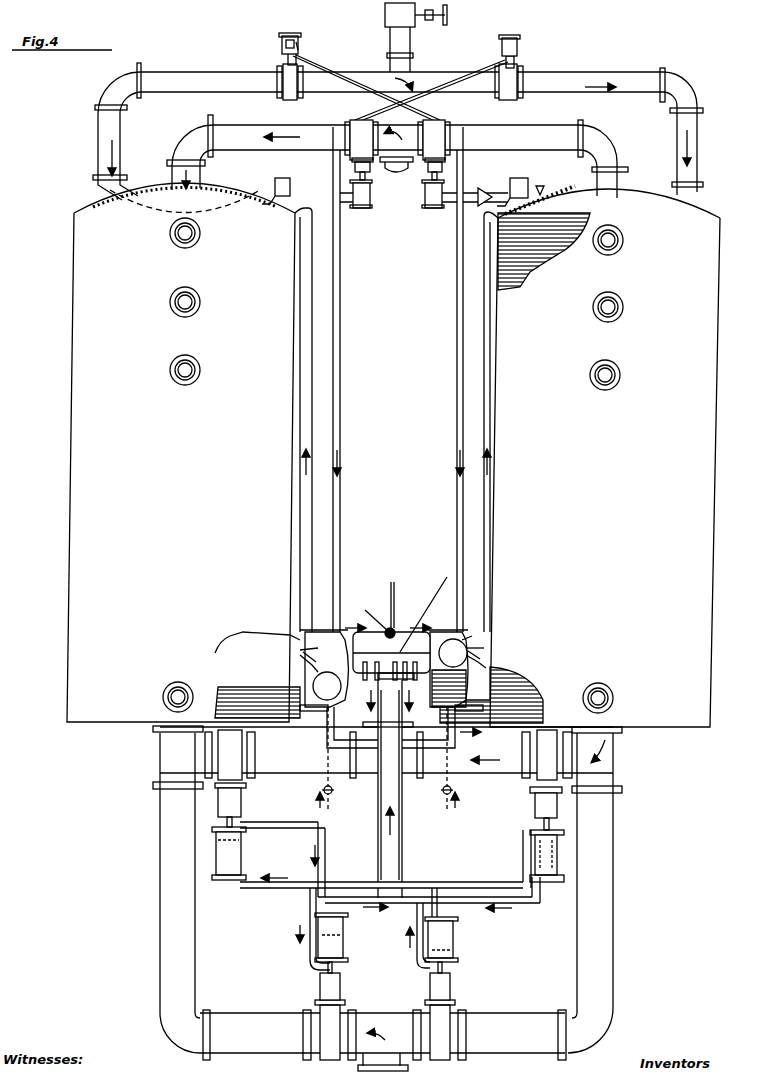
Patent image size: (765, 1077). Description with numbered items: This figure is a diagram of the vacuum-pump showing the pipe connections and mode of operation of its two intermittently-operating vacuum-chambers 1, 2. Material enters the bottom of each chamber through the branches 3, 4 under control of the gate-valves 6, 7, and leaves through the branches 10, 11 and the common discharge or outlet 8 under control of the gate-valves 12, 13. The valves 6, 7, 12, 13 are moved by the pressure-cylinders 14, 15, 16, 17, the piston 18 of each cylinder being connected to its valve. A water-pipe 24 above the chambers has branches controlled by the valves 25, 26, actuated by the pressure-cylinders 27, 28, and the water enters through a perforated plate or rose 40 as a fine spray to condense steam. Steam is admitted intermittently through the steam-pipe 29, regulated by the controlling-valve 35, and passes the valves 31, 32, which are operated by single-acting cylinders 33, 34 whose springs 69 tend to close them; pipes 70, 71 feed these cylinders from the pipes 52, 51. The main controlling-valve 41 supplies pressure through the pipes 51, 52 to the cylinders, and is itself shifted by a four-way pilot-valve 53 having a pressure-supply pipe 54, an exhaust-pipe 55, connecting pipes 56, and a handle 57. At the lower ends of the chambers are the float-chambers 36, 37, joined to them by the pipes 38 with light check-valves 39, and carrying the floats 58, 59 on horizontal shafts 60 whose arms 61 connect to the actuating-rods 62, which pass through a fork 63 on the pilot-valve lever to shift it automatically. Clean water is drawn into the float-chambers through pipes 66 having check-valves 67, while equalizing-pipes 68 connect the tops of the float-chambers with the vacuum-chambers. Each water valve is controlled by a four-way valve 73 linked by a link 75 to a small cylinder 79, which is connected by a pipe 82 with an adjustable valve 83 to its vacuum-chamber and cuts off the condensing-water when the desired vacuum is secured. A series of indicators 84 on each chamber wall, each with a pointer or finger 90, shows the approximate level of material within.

The vacuum-chamber 1 is at (181, 452).
The vacuum-chamber 2 is at (605, 458).
The branch 3 is at (170, 869).
The branch 4 is at (602, 870).
The valve 6 is at (386, 1018).
The valve 7 is at (440, 1018).
The discharge or outlet 8 is at (405, 718).
The branch 10 is at (269, 760).
The branch 11 is at (507, 760).
The gate-valve 12 is at (230, 778).
The gate-valve 13 is at (547, 780).
The pressure-cylinder 14 is at (385, 896).
The pressure-cylinder 15 is at (429, 922).
The pressure-cylinder 16 is at (238, 853).
The pressure-cylinder 17 is at (551, 856).
The piston 18 is at (245, 836).
The water-pipe 24 is at (402, 172).
The valve 25 is at (358, 120).
The valve 26 is at (436, 120).
The pressure-cylinder 27 is at (359, 203).
The pressure-cylinder 28 is at (439, 203).
The steam-pipe 29 is at (398, 113).
The controlling-valve 31 is at (290, 86).
The controlling-valve 32 is at (509, 86).
The pressure-cylinder 33 is at (359, 70).
The pressure-cylinder 34 is at (435, 71).
The controlling-valve 35 is at (404, 15).
The float-chamber 36 is at (324, 659).
The float-chamber 37 is at (452, 658).
The pipe 38 is at (379, 677).
The check-valve 39 is at (313, 714).
The perforated plate or rose 40 is at (610, 210).
The main controlling-valve 41 is at (360, 690).
The pipe 51 is at (377, 793).
The pipe 52 is at (410, 785).
The pilot-valve 53 is at (393, 628).
The pressure-supply pipe 54 is at (400, 596).
The exhaust-pipe 55 is at (391, 656).
The pipes 56 is at (390, 618).
The handle 57 is at (374, 608).
The float 58 is at (327, 686).
The float 59 is at (453, 653).
The horizontal shaft 60 is at (300, 664).
The arm 61 is at (300, 650).
The actuating-rod 62 is at (474, 638).
The fork 63 is at (401, 611).
The pipe 66 is at (446, 800).
The check-valve 67 is at (324, 790).
The equalizing-pipe 68 is at (300, 376).
The spring 69 is at (299, 43).
The pipe 70 is at (456, 380).
The pipe 71 is at (341, 380).
The four-way valve 73 is at (480, 187).
The link 75 is at (480, 203).
The cylinder 79 is at (395, 184).
The pipe 82 is at (540, 194).
The valve 83 is at (540, 184).
The indicator 84 is at (628, 240).
The pointer or finger 90 is at (185, 380).